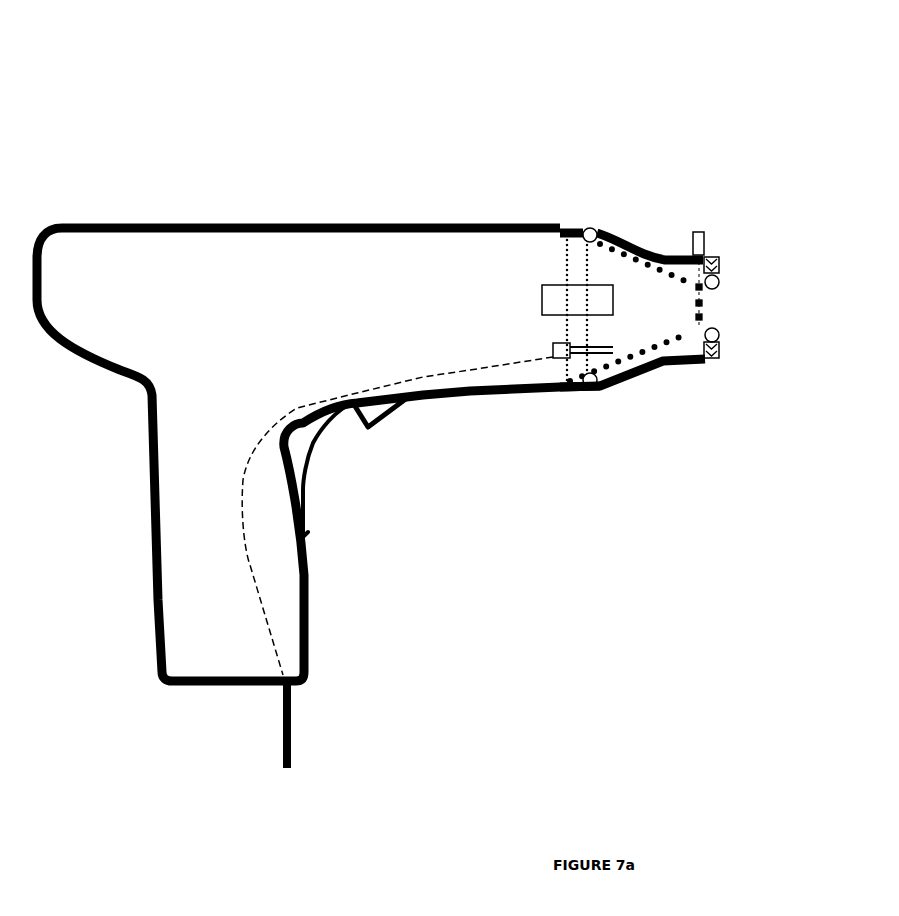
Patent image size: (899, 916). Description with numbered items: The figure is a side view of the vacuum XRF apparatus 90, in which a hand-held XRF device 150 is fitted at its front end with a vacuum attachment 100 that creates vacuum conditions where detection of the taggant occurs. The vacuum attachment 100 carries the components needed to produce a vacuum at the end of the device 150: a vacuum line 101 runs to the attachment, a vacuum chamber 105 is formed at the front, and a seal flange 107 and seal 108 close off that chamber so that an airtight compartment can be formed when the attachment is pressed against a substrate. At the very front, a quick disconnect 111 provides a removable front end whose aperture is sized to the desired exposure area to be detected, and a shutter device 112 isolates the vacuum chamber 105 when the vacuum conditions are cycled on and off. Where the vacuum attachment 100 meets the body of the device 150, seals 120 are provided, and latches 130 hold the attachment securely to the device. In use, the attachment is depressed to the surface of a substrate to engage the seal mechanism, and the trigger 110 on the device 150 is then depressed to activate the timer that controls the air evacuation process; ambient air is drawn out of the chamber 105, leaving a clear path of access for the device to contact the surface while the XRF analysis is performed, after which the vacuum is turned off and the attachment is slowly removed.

The hand-held XRF device 150 is at (235, 198).
The vacuum XRF apparatus 90 is at (234, 301).
The vacuum attachment 100 is at (830, 142).
The vacuum chamber 105 is at (667, 313).
The seal flange 107 is at (722, 272).
The seal 108 is at (720, 334).
The trigger 110 is at (400, 416).
The quick disconnect 111 is at (569, 397).
The shutter device 112 is at (719, 229).
The seals 120 is at (604, 392).
The latches 130 is at (617, 319).
The vacuum line 101 is at (281, 751).